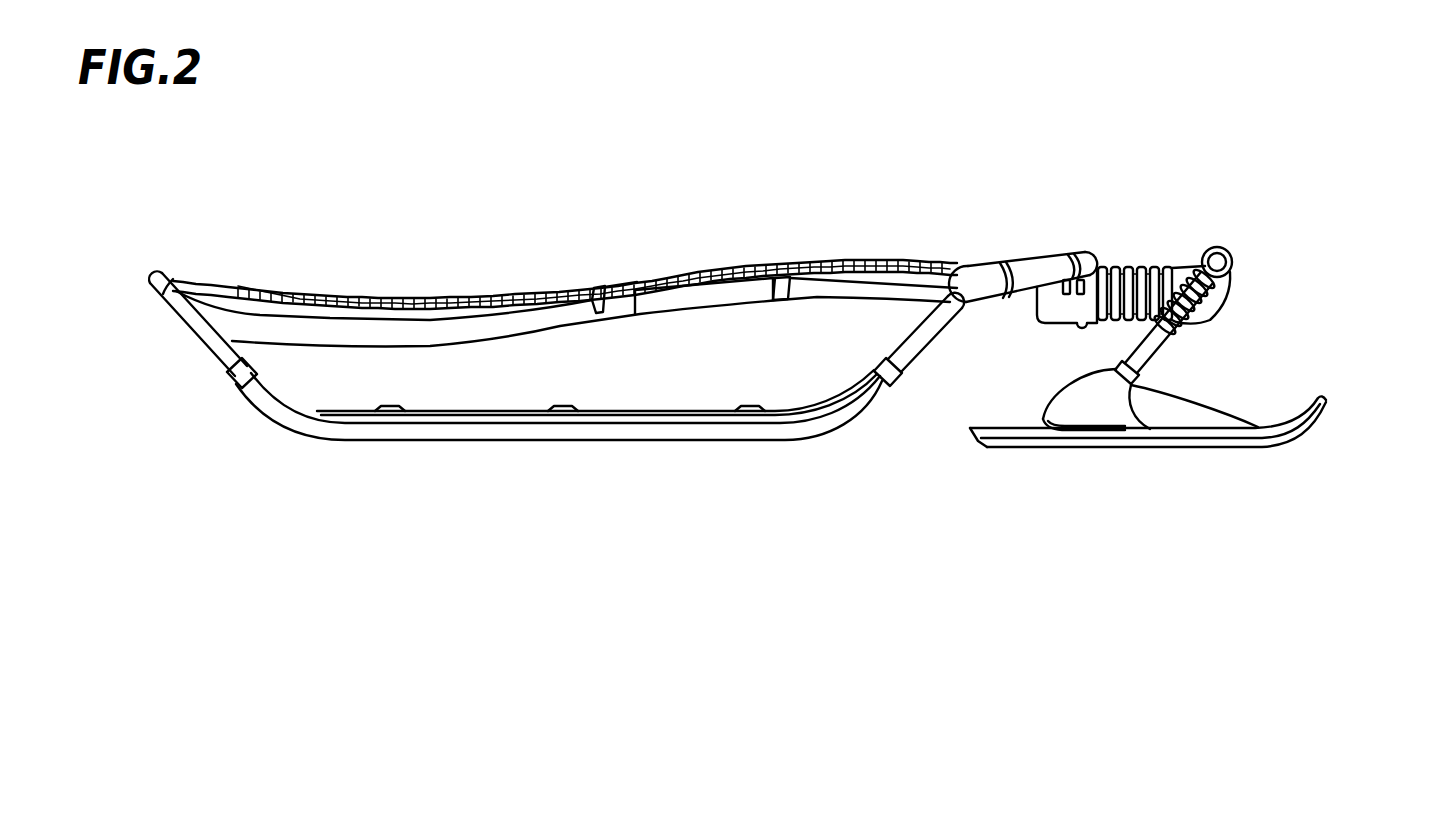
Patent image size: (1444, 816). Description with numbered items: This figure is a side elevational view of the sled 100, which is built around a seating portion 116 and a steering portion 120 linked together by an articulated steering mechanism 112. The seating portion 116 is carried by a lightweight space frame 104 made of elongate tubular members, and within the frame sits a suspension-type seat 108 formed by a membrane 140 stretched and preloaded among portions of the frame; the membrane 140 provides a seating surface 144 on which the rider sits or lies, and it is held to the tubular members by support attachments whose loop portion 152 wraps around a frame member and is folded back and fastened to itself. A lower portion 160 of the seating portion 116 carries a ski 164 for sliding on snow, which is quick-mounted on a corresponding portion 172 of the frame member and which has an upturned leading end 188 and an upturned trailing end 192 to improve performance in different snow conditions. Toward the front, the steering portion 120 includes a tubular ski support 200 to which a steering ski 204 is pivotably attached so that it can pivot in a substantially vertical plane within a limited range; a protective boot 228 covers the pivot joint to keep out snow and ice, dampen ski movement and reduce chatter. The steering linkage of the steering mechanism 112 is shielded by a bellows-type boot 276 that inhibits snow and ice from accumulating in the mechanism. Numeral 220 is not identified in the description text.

The sled 100 is at (695, 160).
The space frame 104 is at (186, 352).
The suspension-type seat 108 is at (290, 278).
The articulated steering mechanism 112 is at (1197, 228).
The seating portion 116 is at (441, 170).
The steering portion 120 is at (1284, 296).
The membrane 140 is at (525, 276).
The seating surface 144 is at (384, 290).
The loop portion 152 is at (793, 293).
The lower portion 160 is at (444, 498).
The ski 164 is at (715, 432).
The portion of member 172 is at (512, 406).
The upturned leading end 188 is at (880, 400).
The upturned trailing end 192 is at (238, 388).
The ski support 200 is at (1173, 359).
The ski 204 is at (1152, 447).
The ski tip 220 is at (1322, 405).
The protective boot 228 is at (1070, 396).
The boot 276 is at (1128, 268).